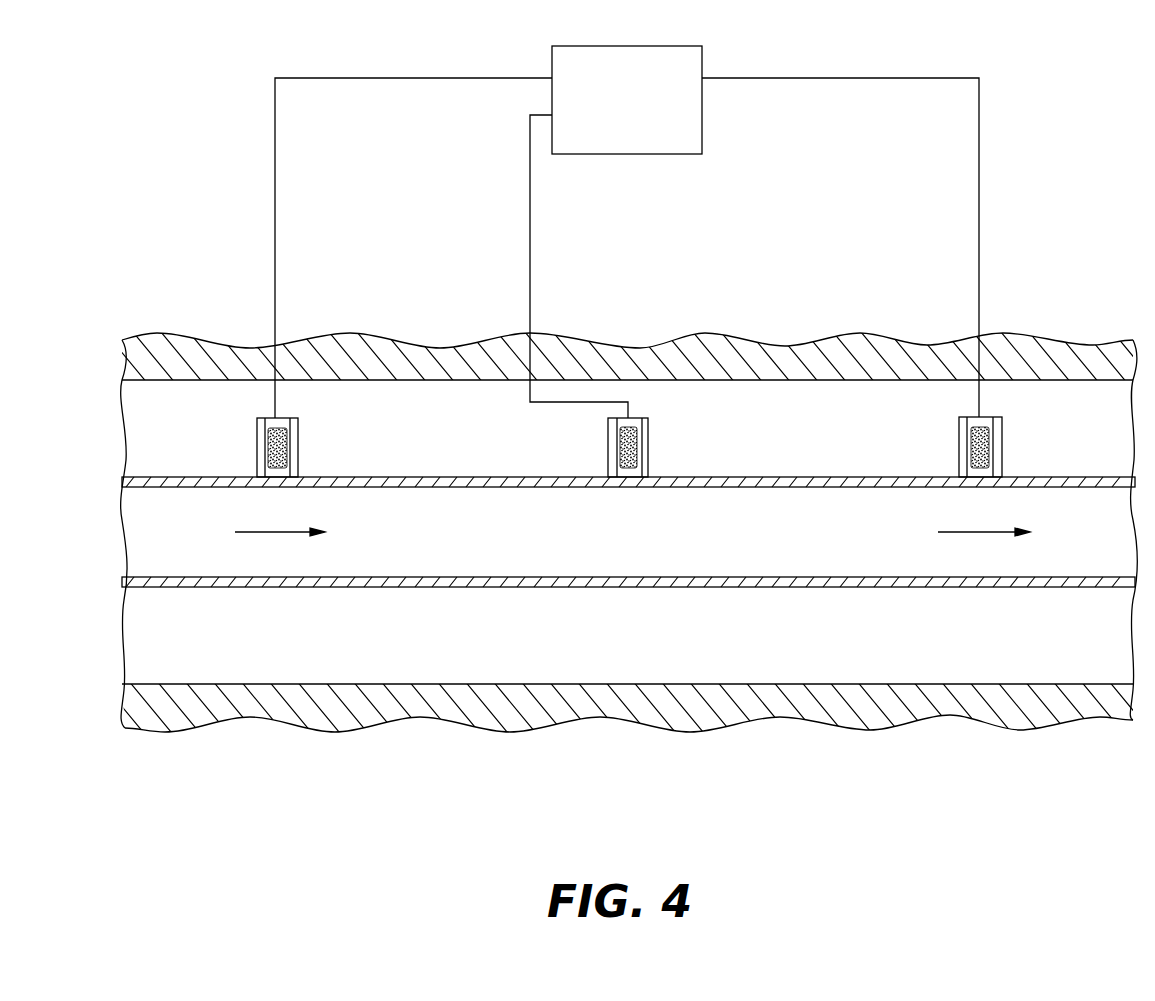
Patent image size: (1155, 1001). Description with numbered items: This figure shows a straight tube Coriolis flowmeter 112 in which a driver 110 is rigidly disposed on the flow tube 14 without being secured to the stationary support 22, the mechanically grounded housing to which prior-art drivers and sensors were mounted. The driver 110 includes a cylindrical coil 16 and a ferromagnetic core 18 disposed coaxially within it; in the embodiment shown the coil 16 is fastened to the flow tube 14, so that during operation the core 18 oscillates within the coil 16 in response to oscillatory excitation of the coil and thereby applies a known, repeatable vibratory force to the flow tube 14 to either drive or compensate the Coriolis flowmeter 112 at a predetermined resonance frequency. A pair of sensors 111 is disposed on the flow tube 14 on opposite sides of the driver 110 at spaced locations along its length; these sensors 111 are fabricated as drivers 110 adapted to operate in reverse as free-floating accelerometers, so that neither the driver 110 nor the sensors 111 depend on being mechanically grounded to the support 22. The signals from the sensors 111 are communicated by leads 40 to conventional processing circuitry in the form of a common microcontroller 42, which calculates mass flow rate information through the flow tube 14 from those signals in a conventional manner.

The flow tube 14 is at (942, 586).
The cylindrical coil 16 is at (646, 427).
The ferromagnetic core 18 is at (630, 450).
The stationary support 22 is at (472, 380).
The leads 40 is at (275, 260).
The microcontroller 42 is at (646, 118).
The driver 110 is at (685, 432).
The sensors 111 is at (322, 442).
The Coriolis flowmeter 112 is at (840, 456).